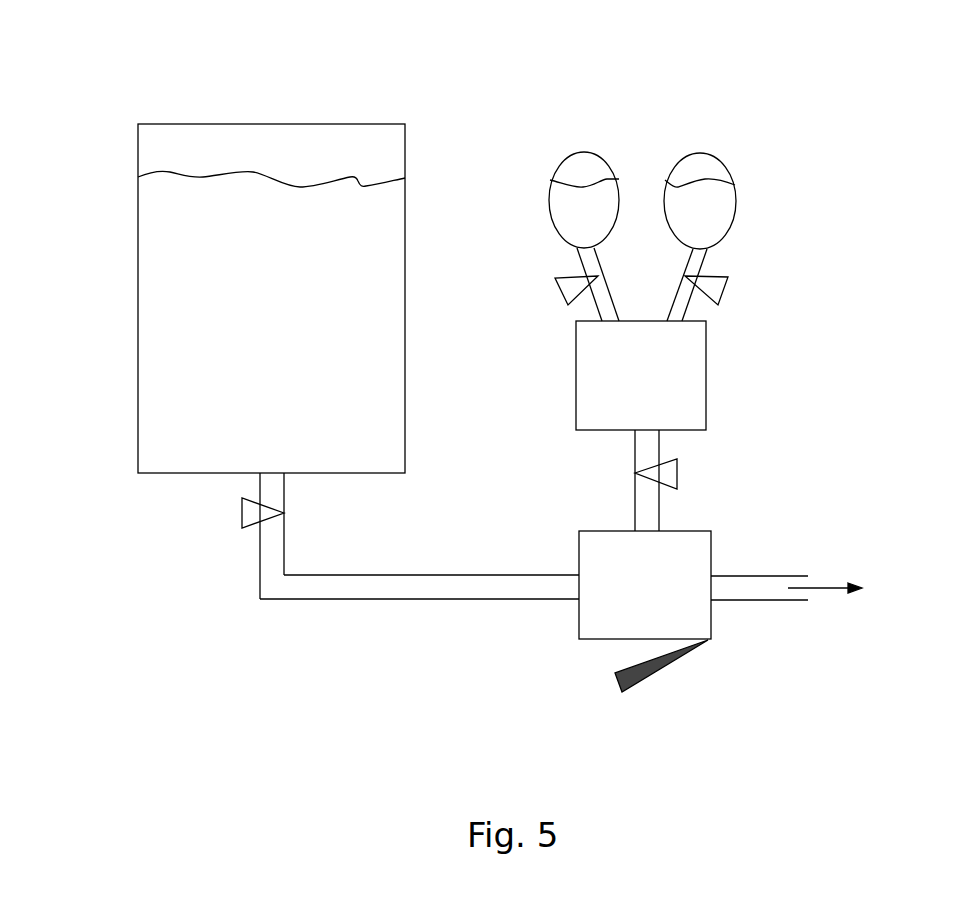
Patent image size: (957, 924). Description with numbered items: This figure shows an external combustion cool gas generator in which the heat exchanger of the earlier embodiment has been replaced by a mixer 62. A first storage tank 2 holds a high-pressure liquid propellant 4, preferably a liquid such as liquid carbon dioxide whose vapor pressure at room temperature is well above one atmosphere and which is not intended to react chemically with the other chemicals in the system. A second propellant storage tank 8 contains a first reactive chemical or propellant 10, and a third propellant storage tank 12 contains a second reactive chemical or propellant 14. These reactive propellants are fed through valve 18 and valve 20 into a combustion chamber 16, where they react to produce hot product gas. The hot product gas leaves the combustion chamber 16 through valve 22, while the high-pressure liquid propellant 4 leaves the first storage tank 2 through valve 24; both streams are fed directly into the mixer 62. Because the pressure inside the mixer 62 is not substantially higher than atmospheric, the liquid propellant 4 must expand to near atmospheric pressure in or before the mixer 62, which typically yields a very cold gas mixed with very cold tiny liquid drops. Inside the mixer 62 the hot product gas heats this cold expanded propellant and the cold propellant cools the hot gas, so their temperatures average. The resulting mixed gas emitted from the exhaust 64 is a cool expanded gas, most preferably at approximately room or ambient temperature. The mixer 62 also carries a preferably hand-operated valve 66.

The first storage tank 2 is at (345, 123).
The high-pressure liquid propellant 4 is at (185, 268).
The second propellant storage tank 8 is at (725, 162).
The first reactive chemical or propellant 10 is at (707, 217).
The third propellant storage tank 12 is at (607, 160).
The second reactive chemical or propellant 14 is at (590, 216).
The combustion chamber 16 is at (641, 375).
The valve 18 is at (723, 300).
The valve 20 is at (560, 298).
The valve 22 is at (678, 470).
The valve 24 is at (240, 520).
The mixer 62 is at (645, 585).
The exhaust 64 is at (755, 601).
The hand-operated valve 66 is at (662, 675).